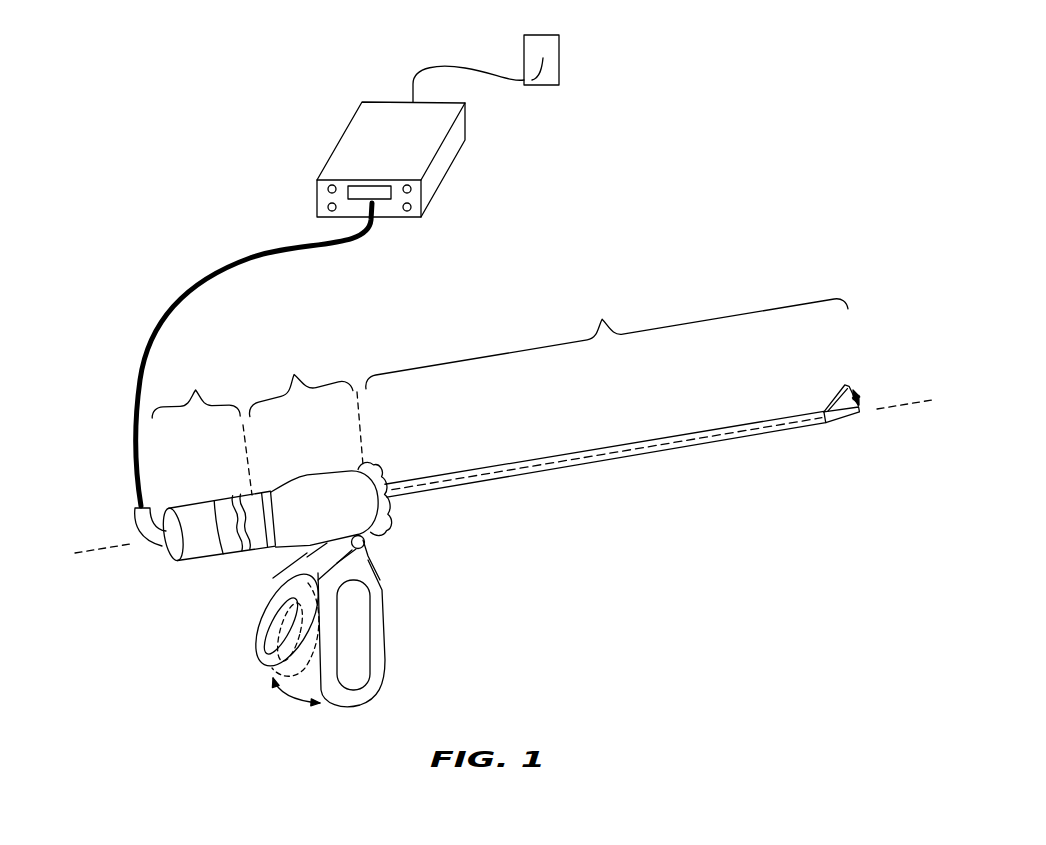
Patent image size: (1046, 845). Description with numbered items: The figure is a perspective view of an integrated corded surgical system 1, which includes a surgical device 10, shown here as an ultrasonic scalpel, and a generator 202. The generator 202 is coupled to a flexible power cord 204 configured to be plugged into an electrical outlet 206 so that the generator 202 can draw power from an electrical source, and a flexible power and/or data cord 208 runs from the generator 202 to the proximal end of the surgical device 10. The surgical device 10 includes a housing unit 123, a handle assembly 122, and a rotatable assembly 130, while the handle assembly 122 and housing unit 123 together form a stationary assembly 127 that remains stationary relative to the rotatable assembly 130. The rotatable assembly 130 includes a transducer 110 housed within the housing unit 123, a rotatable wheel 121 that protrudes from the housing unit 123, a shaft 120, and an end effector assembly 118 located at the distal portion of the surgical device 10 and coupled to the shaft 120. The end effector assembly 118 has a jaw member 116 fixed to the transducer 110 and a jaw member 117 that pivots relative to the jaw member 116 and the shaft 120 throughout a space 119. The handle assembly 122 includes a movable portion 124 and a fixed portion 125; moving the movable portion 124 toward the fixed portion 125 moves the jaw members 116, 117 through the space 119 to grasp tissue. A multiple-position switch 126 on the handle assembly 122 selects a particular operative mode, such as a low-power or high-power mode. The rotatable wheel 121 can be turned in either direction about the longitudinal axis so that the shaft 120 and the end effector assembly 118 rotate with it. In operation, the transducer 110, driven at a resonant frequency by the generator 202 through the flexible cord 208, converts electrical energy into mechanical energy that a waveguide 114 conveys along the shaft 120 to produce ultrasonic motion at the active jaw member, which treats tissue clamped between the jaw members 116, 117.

The integrated corded surgical system 1 is at (756, 70).
The surgical device 10 is at (470, 462).
The transducer 110 is at (215, 557).
The waveguide 114 is at (655, 452).
The jaw member 116 is at (853, 415).
The jaw member 117 is at (830, 403).
The end effector assembly 118 is at (816, 438).
The space 119 is at (857, 392).
The shaft 120 is at (545, 478).
The rotatable wheel 121 is at (381, 469).
The handle assembly 122 is at (368, 568).
The housing unit 123 is at (328, 521).
The movable portion 124 is at (258, 646).
The fixed portion 125 is at (376, 668).
The switch 126 is at (366, 548).
The stationary assembly 127 is at (303, 420).
The rotatable assembly 130 is at (500, 355).
The generator 202 is at (370, 131).
The flexible power cord 204 is at (463, 67).
The electrical outlet 206 is at (559, 50).
The flexible cord 208 is at (145, 548).